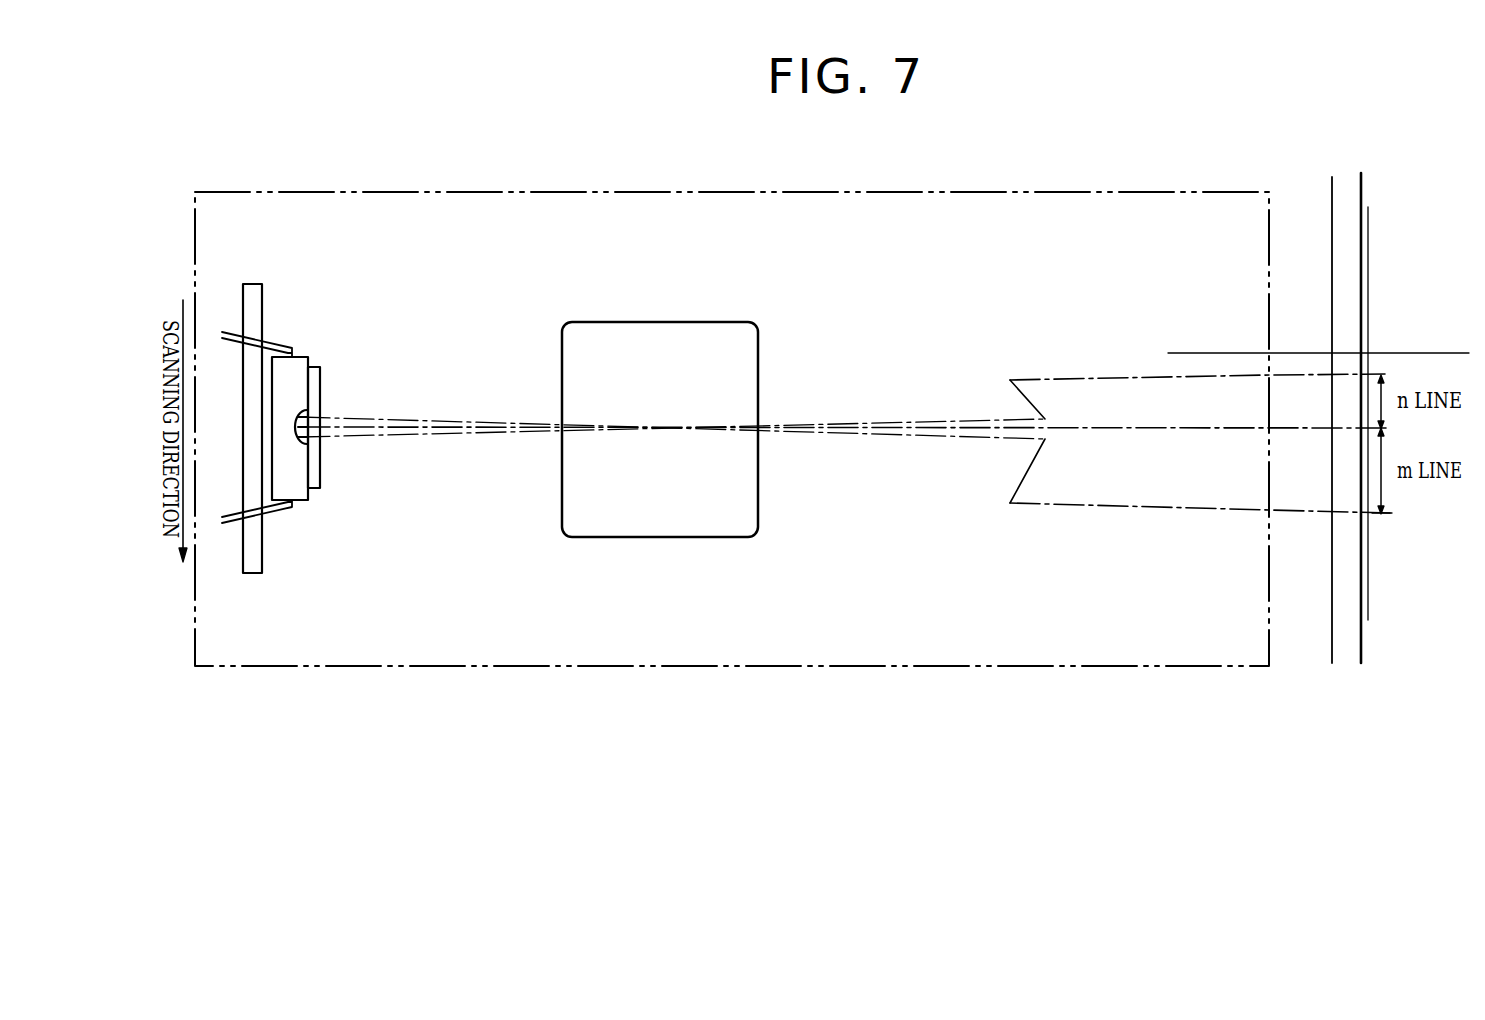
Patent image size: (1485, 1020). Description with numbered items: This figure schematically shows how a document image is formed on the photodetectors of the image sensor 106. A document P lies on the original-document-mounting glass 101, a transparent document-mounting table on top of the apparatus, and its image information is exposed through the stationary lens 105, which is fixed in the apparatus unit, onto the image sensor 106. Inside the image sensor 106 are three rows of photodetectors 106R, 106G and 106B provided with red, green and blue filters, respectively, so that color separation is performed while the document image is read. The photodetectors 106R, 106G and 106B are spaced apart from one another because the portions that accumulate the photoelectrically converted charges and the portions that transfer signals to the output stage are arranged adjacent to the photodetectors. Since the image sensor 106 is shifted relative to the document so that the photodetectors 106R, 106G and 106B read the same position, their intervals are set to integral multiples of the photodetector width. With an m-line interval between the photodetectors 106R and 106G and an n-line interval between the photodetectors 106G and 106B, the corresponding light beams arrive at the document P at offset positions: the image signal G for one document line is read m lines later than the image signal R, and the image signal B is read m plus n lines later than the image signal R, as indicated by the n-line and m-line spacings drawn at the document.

The original-document-mounting glass 101 is at (1338, 642).
The stationary lens 105 is at (717, 528).
The image sensor 106 is at (300, 492).
The red photodetector 106R is at (297, 420).
The green photodetector 106G is at (299, 426).
The blue photodetector 106B is at (297, 437).
The blue image signal B is at (1118, 376).
The green image signal G is at (1125, 430).
The red image signal R is at (1125, 510).
The document P is at (1369, 583).